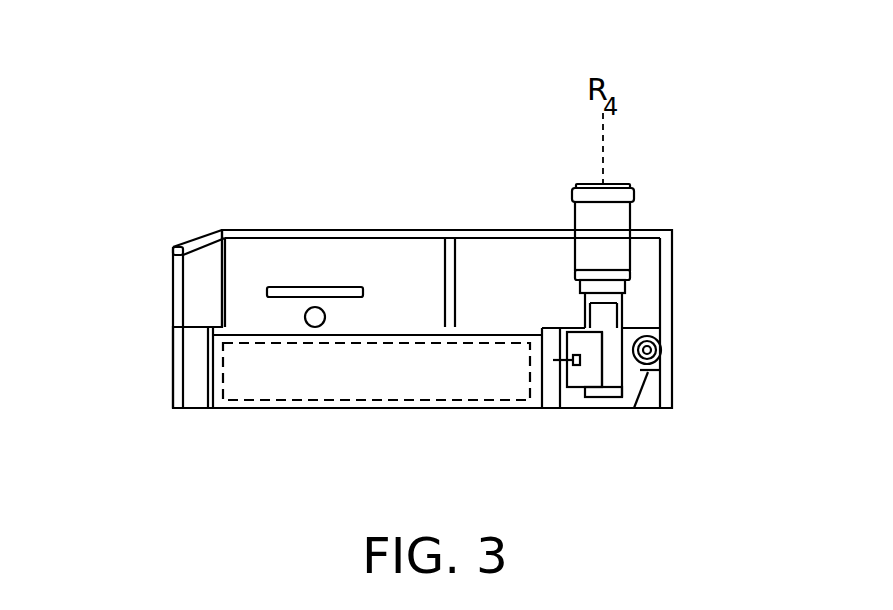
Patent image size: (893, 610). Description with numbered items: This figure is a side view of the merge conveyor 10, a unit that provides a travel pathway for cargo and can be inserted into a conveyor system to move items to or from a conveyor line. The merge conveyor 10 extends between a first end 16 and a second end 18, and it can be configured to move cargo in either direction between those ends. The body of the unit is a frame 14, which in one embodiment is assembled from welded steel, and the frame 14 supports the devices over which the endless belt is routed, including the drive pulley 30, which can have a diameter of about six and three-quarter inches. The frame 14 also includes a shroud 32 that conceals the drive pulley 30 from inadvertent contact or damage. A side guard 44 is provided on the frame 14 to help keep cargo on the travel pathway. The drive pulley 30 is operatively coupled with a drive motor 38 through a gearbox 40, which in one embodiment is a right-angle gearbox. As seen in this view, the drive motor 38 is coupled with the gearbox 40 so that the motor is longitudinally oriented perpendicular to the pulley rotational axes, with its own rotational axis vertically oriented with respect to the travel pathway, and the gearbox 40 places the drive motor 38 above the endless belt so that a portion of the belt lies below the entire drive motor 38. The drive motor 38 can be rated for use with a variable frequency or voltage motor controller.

The merge conveyor 10 is at (360, 204).
The frame 14 is at (202, 408).
The first end 16 is at (754, 211).
The second end 18 is at (196, 256).
The drive pulley 30 is at (377, 383).
The shroud 32 is at (533, 408).
The drive motor 38 is at (623, 217).
The gearbox 40 is at (610, 355).
The side guard 44 is at (387, 263).